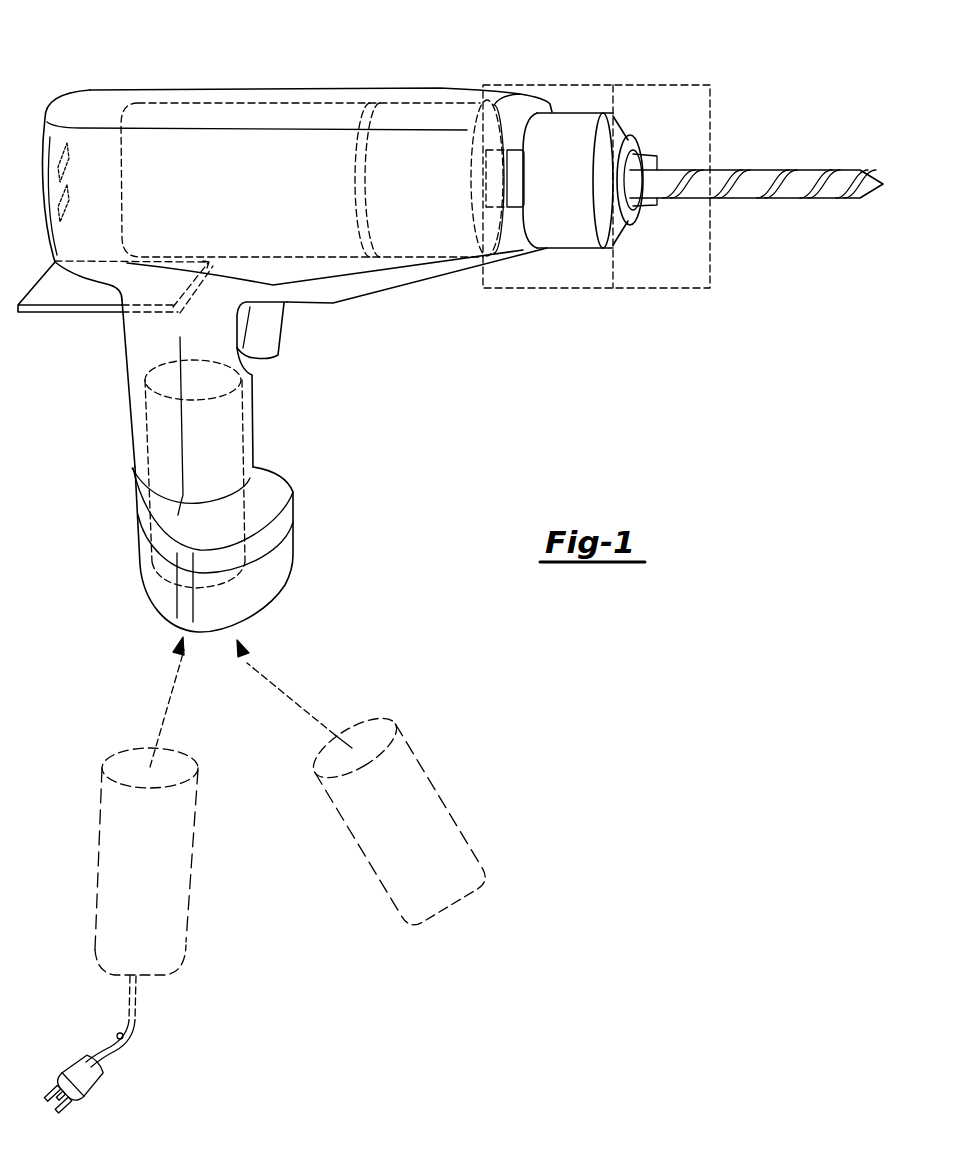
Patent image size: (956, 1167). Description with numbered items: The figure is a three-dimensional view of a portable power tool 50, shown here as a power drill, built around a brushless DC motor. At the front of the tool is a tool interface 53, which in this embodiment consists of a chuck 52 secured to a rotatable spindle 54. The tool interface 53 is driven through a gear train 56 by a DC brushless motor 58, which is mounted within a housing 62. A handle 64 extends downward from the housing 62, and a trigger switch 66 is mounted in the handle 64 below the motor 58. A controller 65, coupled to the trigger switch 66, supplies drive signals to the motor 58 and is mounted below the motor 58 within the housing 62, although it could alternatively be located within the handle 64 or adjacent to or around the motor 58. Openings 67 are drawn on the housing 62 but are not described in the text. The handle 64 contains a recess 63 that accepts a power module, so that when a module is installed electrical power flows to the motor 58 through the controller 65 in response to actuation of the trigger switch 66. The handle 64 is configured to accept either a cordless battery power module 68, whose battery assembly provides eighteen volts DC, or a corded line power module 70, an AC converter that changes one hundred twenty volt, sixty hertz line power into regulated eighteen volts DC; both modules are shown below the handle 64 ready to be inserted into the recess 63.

The portable power tool 50 is at (140, 82).
The chuck 52 is at (630, 116).
The tool interface 53 is at (594, 291).
The rotatable spindle 54 is at (517, 148).
The gear train 56 is at (437, 100).
The DC brushless motor 58 is at (223, 118).
The housing 62 is at (333, 88).
The recess 63 is at (235, 478).
The handle 64 is at (135, 467).
The controller 65 is at (43, 313).
The trigger switch 66 is at (279, 325).
The vents 67 is at (67, 200).
The cordless battery power module 68 is at (413, 757).
The corded line power module 70 is at (188, 900).